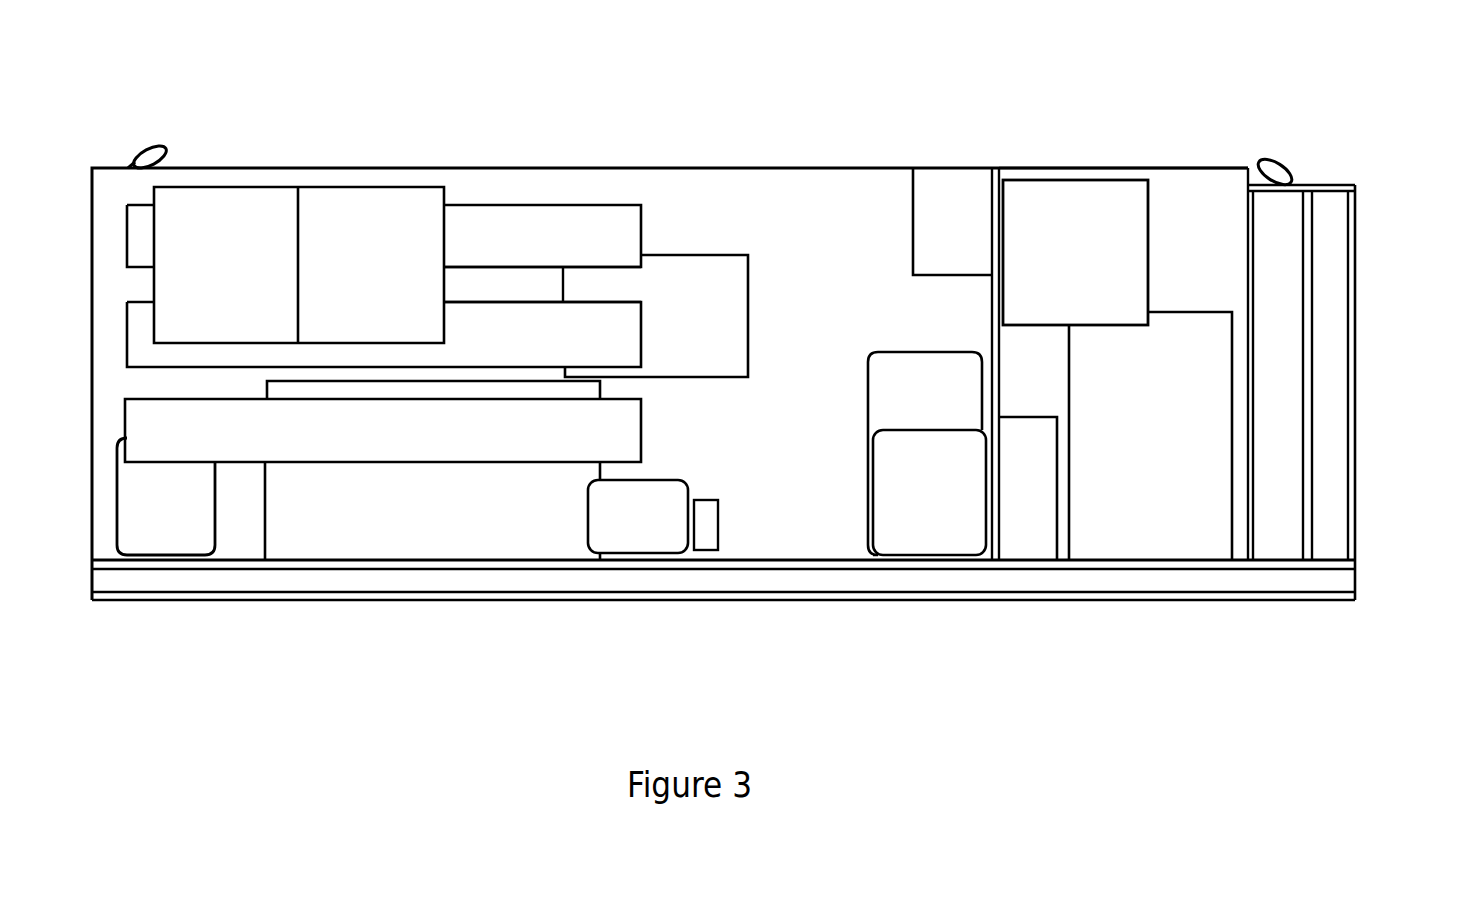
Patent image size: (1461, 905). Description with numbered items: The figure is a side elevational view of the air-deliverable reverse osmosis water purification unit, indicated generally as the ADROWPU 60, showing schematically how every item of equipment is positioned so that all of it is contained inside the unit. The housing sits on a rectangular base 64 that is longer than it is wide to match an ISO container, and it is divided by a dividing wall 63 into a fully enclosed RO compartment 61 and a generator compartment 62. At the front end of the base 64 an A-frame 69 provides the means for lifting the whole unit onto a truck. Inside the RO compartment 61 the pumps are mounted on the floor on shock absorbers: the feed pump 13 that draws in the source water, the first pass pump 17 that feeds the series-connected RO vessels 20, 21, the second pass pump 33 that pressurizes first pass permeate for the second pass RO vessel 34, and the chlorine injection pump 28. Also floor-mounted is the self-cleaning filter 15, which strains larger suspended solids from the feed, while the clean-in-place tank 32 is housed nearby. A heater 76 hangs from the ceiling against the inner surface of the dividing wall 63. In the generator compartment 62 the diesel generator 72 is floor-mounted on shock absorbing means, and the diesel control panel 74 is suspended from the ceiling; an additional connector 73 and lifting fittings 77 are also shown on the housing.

The feed pump 13 is at (218, 555).
The self-cleaning filter 15 is at (941, 495).
The first pass pump 17 is at (373, 517).
The RO vessel 20 is at (533, 205).
The RO vessel 21 is at (607, 302).
The chlorine injection pump 28 is at (698, 553).
The clean-in-place tank 32 is at (748, 290).
The second pass pump 33 is at (868, 392).
The second pass RO vessel 34 is at (414, 445).
The ADROWPU 60 is at (1188, 165).
The RO compartment 61 is at (836, 223).
The generator compartment 62 is at (1212, 233).
The dividing wall 63 is at (992, 308).
The base 64 is at (138, 595).
The A-frame 69 is at (1355, 308).
The diesel generator 72 is at (1163, 417).
The connector 73 is at (1055, 515).
The diesel control panel 74 is at (1084, 260).
The heater 76 is at (913, 193).
The handle 77 is at (168, 148).